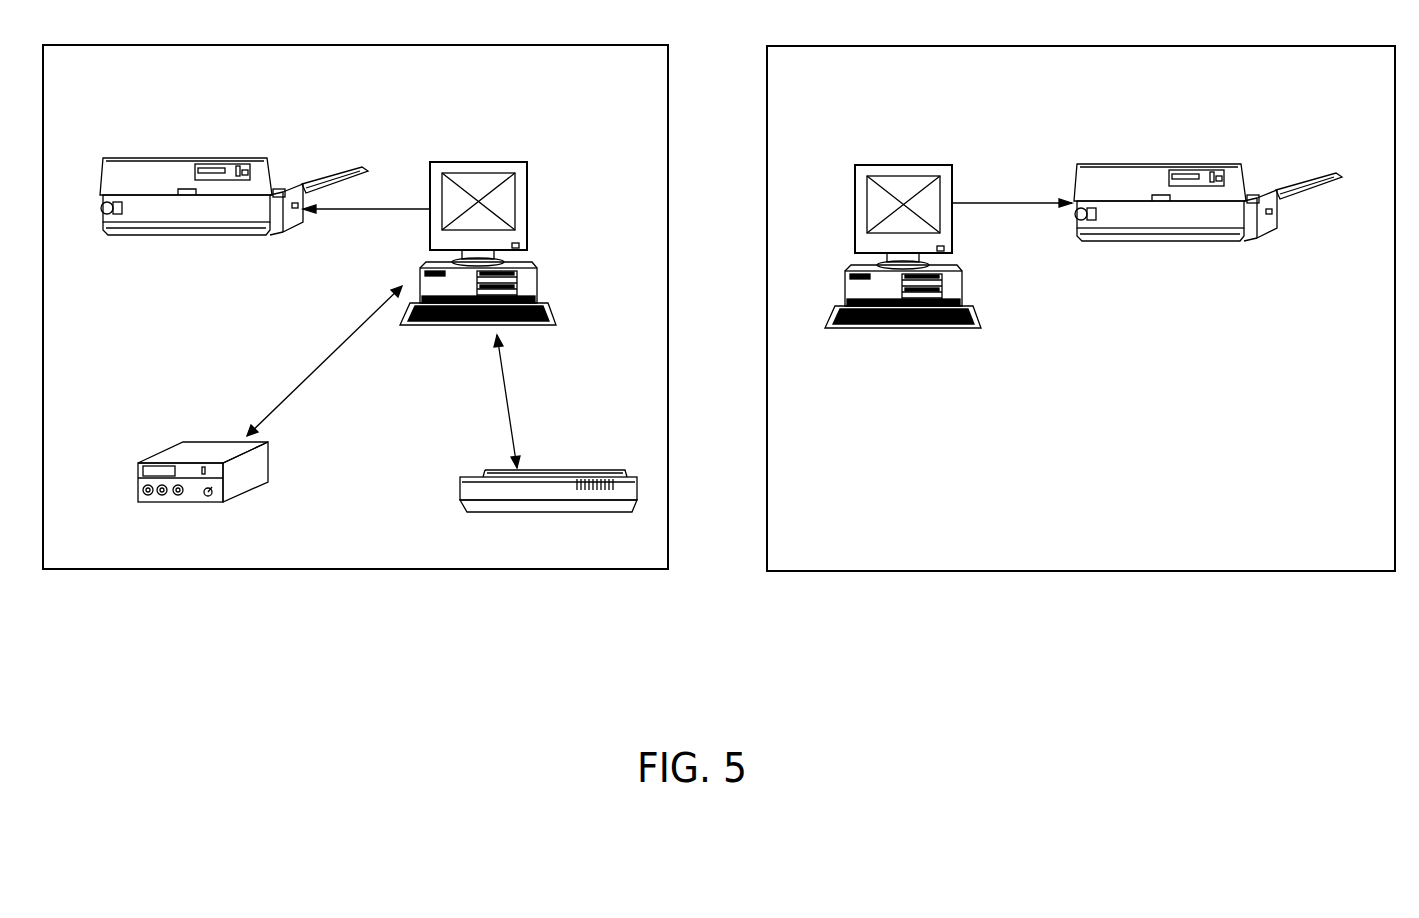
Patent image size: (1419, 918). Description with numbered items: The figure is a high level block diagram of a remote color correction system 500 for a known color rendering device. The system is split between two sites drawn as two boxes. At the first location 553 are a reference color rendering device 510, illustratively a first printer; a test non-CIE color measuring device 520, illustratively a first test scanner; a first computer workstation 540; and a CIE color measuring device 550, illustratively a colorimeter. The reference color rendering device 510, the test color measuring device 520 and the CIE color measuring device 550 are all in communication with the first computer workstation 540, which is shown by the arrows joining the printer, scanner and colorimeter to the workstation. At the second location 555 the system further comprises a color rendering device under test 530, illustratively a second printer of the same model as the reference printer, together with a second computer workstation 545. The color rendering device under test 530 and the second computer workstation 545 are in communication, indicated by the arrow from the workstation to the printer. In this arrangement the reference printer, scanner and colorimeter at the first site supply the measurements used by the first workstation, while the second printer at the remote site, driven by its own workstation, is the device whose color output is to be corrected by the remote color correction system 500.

The remote color correction system 500 is at (1066, 716).
The reference color rendering device 510 is at (160, 237).
The test non-CIE color measuring device 520 is at (597, 473).
The color rendering device under test 530 is at (1136, 244).
The first computer workstation 540 is at (487, 158).
The second computer workstation 545 is at (912, 163).
The CIE color measuring device 550 is at (216, 440).
The first location 553 is at (108, 556).
The second location 555 is at (832, 556).